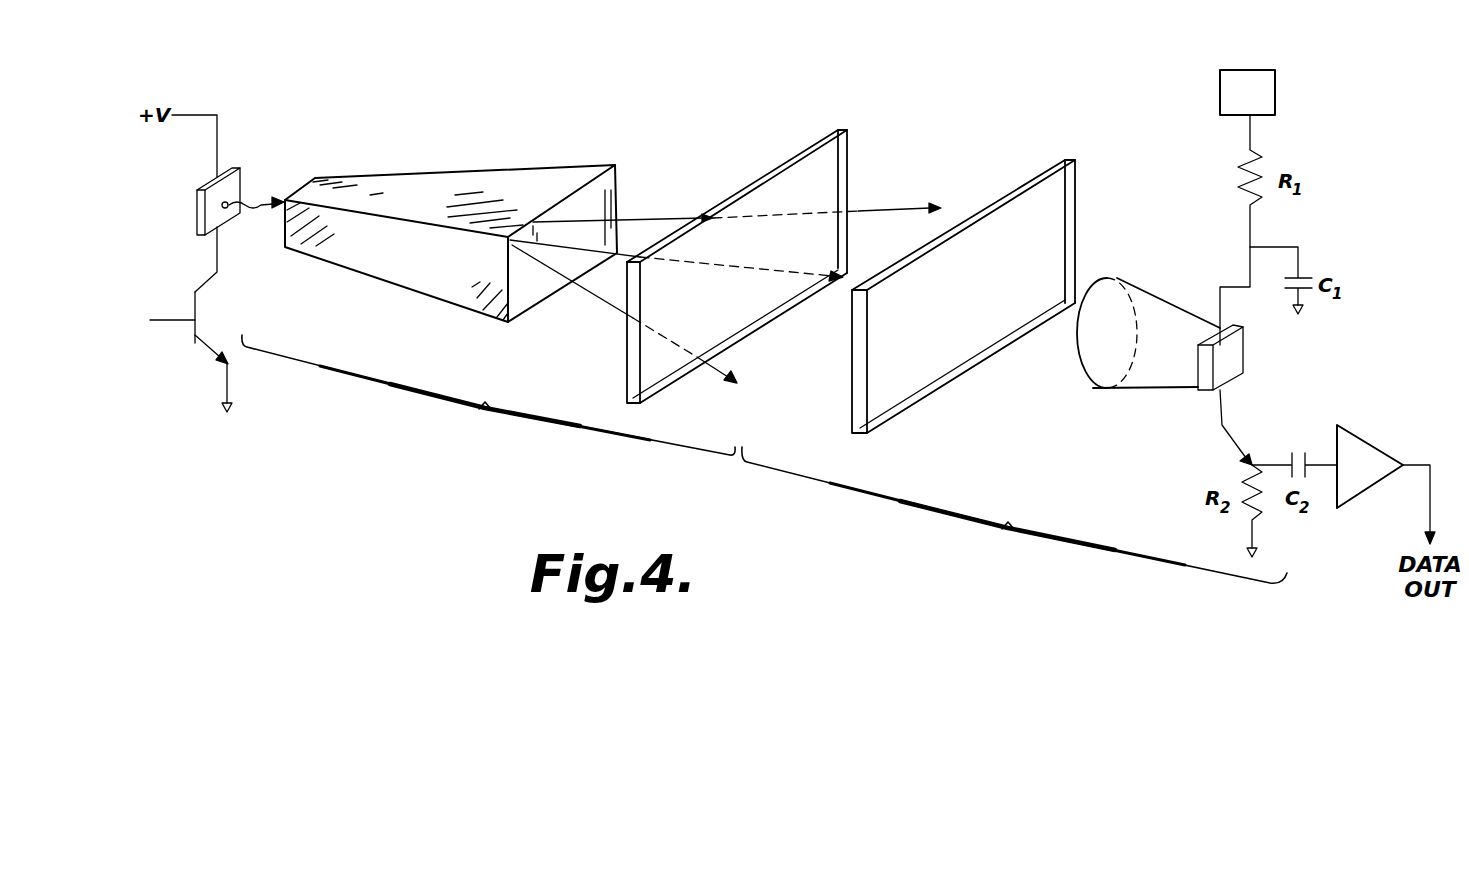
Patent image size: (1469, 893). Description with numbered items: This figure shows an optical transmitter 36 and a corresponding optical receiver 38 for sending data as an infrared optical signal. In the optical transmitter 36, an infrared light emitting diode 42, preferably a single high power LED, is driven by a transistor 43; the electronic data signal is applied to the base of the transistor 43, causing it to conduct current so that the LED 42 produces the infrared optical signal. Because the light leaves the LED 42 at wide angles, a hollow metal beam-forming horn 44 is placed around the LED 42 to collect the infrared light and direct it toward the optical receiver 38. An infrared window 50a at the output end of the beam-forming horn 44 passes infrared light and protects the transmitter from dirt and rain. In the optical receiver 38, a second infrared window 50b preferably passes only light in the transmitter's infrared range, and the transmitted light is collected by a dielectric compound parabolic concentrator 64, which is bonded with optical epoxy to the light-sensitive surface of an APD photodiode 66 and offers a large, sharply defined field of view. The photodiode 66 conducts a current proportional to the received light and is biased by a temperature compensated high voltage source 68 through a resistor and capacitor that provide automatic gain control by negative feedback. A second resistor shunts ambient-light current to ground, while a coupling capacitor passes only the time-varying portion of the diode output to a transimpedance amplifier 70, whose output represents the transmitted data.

The optical transmitter 36 is at (488, 395).
The optical receiver 38 is at (1014, 515).
The infrared light emitting diode 42 is at (203, 212).
The transistor 43 is at (195, 337).
The beam-forming horn 44 is at (470, 185).
The infrared window 50a is at (785, 165).
The infrared window 50b is at (1010, 195).
The compound parabolic concentrator 64 is at (1140, 382).
The photodiode 66 is at (1232, 365).
The high voltage source 68 is at (1250, 70).
The transimpedance amplifier 70 is at (1372, 441).